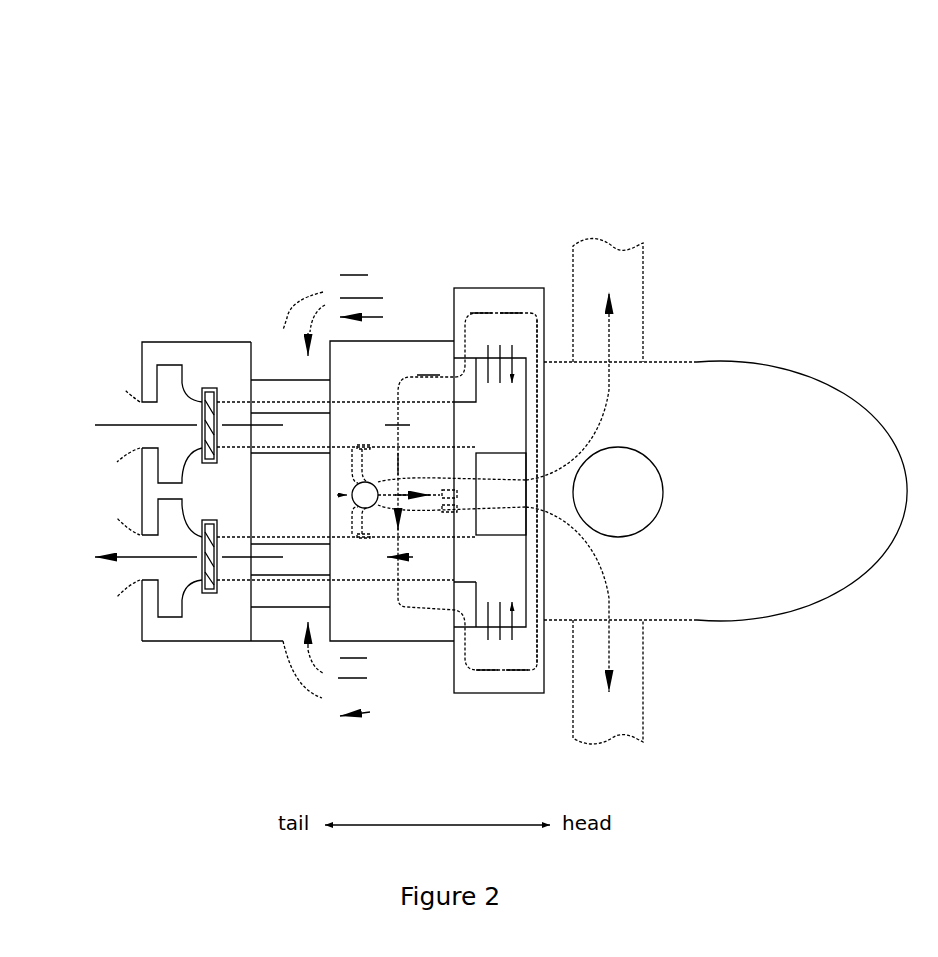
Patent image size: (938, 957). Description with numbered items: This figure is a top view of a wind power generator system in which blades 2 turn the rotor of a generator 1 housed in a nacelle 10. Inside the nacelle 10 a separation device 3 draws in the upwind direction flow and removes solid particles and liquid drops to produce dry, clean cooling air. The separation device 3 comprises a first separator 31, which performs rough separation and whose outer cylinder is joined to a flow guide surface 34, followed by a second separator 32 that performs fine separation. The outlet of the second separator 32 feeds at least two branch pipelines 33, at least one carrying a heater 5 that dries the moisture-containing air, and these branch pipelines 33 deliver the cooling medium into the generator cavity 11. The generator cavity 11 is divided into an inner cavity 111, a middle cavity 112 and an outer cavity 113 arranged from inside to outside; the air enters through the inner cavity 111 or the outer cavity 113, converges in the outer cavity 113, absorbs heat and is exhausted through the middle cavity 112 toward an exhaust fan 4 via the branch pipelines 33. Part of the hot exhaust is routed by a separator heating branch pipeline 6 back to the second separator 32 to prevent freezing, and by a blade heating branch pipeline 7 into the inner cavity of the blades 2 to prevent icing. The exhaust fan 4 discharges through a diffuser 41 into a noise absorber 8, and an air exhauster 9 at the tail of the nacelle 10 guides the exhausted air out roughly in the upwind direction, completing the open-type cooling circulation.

The generator 1 is at (545, 490).
The blades 2 is at (645, 317).
The separation device 3 is at (88, 66).
The first separator 31 is at (345, 475).
The second separator 32 is at (360, 482).
The branch pipelines 33 is at (408, 393).
The flow guide surface 34 is at (320, 352).
The exhaust fan 4 is at (205, 593).
The diffuser 41 is at (172, 377).
The heater 5 is at (445, 512).
The separator heating branch pipeline 6 is at (343, 522).
The blade heating branch pipeline 7 is at (612, 383).
The noise absorber 8 is at (197, 397).
The air exhauster 9 is at (140, 403).
The nacelle 10 is at (223, 641).
The generator cavity 11 is at (598, 90).
The inner cavity 111 is at (515, 415).
The middle cavity 112 is at (536, 330).
The outer cavity 113 is at (493, 460).